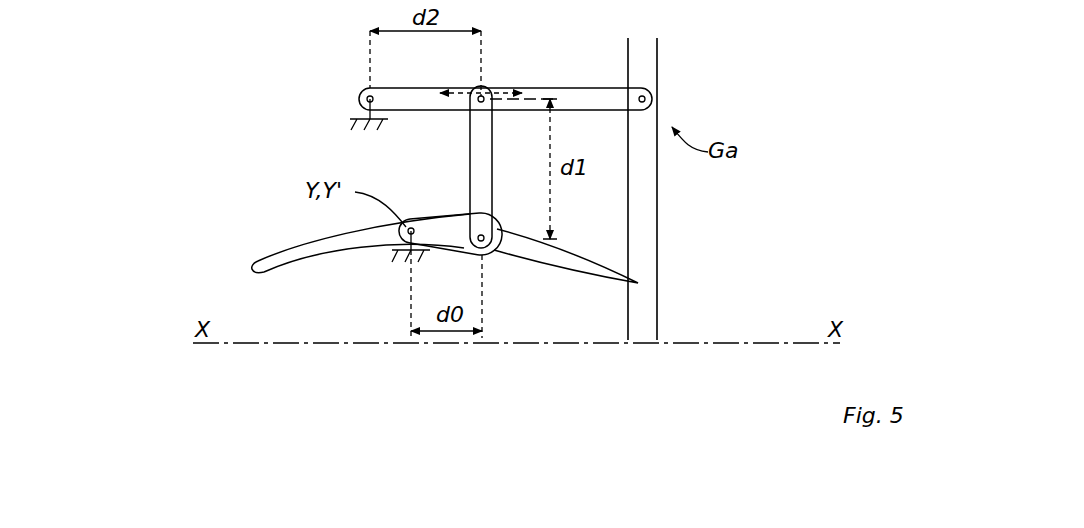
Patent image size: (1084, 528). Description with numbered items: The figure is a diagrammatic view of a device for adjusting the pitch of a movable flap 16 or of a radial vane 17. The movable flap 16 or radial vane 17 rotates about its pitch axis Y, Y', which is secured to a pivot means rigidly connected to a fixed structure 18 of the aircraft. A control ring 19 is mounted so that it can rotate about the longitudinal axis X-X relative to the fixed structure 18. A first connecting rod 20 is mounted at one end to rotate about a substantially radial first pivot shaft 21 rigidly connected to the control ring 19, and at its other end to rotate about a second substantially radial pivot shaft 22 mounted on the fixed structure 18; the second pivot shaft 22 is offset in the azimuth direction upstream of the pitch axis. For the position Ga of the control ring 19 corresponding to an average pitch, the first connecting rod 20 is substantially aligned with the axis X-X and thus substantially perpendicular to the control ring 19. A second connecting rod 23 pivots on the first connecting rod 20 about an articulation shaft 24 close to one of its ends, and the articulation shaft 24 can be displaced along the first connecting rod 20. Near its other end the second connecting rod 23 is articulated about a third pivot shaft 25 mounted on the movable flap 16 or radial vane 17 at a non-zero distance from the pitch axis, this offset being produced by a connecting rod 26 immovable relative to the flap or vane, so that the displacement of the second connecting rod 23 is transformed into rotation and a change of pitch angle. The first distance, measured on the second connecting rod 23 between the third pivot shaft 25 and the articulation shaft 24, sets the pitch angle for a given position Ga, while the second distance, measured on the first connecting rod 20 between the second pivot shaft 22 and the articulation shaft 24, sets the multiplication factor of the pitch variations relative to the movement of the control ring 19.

The movable flap 16 is at (290, 245).
The radial vane 17 is at (404, 248).
The fixed structure 18 is at (352, 123).
The control ring 19 is at (640, 226).
The first connecting rod 20 is at (592, 100).
The first pivot shaft 21 is at (655, 99).
The second pivot shaft 22 is at (360, 99).
The second connecting rod 23 is at (470, 180).
The articulation shaft 24 is at (482, 97).
The third pivot shaft 25 is at (490, 253).
The connecting rod 26 is at (462, 252).